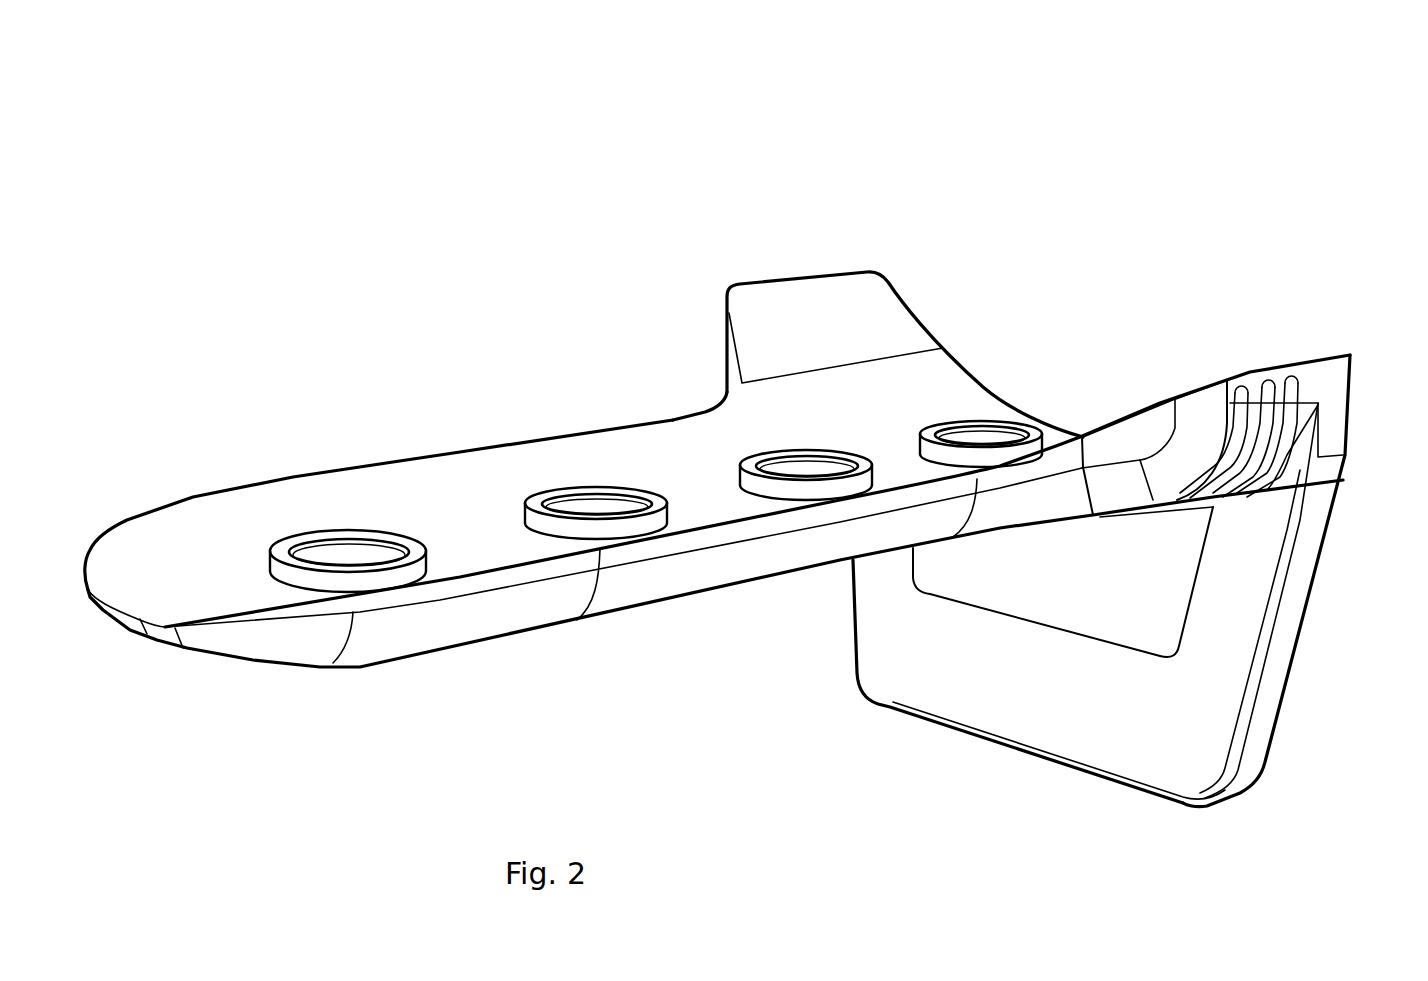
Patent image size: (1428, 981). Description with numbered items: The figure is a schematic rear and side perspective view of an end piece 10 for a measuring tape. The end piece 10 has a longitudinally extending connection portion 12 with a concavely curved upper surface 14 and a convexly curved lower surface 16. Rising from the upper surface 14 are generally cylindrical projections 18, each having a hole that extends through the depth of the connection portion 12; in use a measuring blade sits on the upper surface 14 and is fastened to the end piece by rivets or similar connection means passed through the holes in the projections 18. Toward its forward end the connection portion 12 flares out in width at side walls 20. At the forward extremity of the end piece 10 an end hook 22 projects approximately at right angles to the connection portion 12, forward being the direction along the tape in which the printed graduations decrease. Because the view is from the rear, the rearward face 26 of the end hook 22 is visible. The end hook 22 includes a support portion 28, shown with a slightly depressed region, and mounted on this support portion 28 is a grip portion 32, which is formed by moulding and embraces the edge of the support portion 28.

The end piece 10 is at (622, 185).
The connection portion 12 is at (495, 442).
The upper surface 14 is at (357, 500).
The lower surface 16 is at (488, 627).
The cylindrical projections 18 is at (748, 473).
The side walls 20 is at (867, 287).
The end hook 22 is at (874, 742).
The rearward face 26 is at (1034, 573).
The support portion 28 is at (1108, 630).
The grip portion 32 is at (1188, 753).